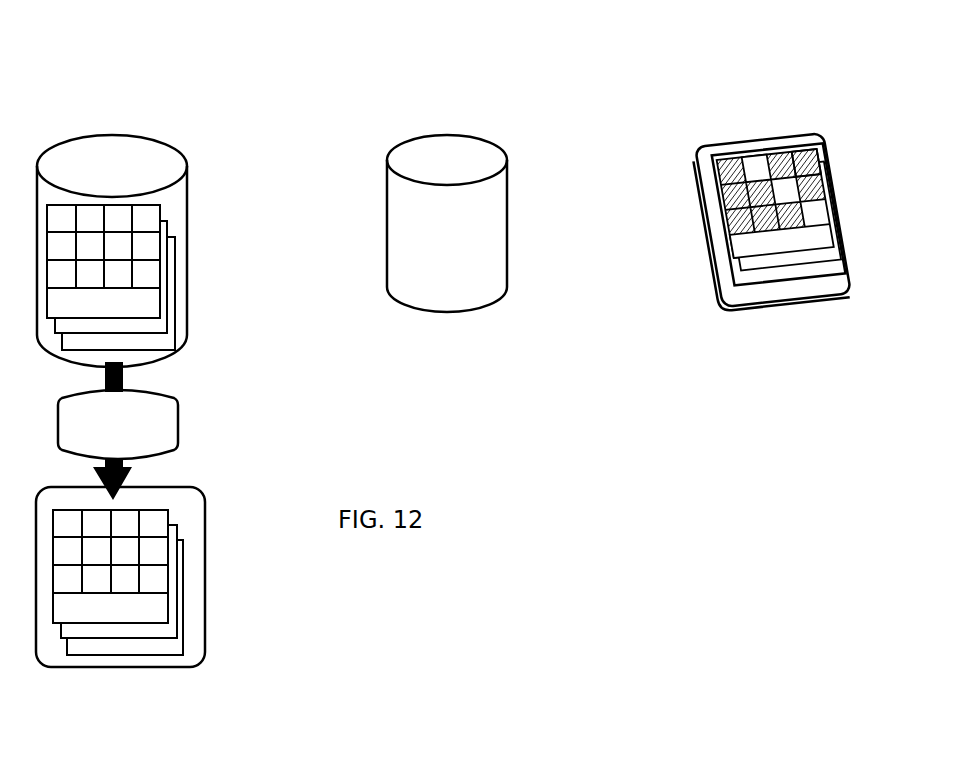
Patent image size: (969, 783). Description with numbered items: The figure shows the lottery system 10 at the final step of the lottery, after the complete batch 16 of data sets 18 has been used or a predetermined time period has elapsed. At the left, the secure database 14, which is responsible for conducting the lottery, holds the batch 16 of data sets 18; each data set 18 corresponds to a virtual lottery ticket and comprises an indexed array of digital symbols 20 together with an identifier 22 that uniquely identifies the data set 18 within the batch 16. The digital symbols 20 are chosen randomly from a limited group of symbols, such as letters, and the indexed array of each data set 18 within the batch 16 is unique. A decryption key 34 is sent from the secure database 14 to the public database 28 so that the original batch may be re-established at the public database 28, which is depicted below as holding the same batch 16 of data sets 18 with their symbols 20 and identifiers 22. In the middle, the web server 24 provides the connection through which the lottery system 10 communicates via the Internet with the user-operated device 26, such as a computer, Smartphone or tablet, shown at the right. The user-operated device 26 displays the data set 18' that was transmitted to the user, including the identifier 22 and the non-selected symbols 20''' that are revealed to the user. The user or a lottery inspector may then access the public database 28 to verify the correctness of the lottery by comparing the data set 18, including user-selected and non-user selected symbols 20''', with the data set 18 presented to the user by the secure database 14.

The lottery system 10 is at (842, 139).
The secure database 14 is at (175, 153).
The batch 16 is at (168, 200).
The data set 18 is at (165, 389).
The digital symbols 20 is at (451, 323).
The identifier 22 is at (137, 300).
The web server 24 is at (508, 180).
The user-operated device 26 is at (720, 288).
The public database 28 is at (175, 487).
The decryption key 34 is at (153, 413).
The data set 18' is at (769, 183).
The non-selected symbols 20''' is at (794, 136).